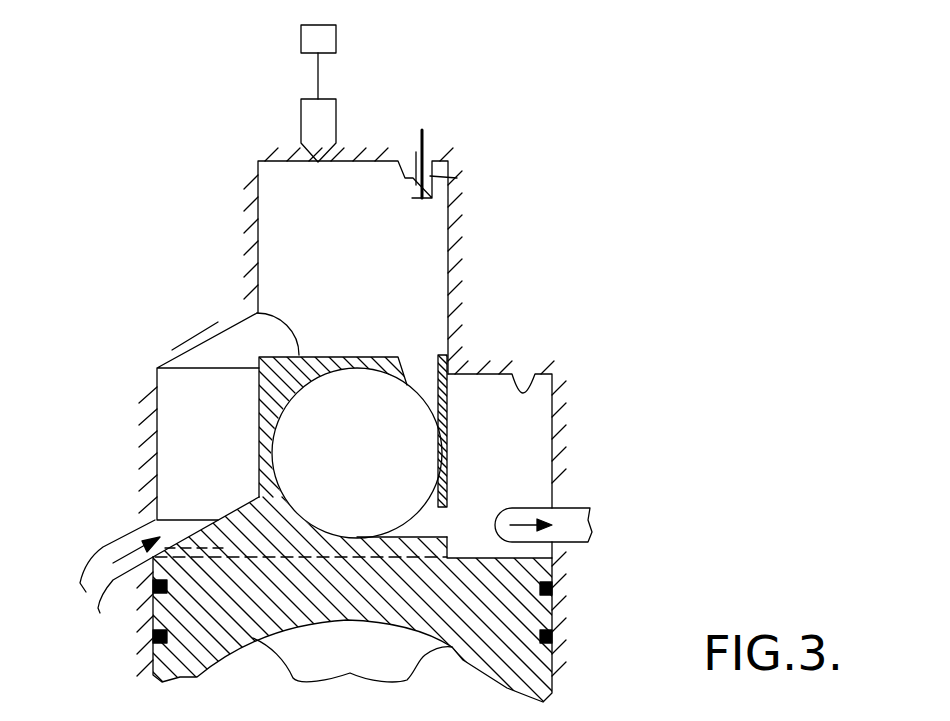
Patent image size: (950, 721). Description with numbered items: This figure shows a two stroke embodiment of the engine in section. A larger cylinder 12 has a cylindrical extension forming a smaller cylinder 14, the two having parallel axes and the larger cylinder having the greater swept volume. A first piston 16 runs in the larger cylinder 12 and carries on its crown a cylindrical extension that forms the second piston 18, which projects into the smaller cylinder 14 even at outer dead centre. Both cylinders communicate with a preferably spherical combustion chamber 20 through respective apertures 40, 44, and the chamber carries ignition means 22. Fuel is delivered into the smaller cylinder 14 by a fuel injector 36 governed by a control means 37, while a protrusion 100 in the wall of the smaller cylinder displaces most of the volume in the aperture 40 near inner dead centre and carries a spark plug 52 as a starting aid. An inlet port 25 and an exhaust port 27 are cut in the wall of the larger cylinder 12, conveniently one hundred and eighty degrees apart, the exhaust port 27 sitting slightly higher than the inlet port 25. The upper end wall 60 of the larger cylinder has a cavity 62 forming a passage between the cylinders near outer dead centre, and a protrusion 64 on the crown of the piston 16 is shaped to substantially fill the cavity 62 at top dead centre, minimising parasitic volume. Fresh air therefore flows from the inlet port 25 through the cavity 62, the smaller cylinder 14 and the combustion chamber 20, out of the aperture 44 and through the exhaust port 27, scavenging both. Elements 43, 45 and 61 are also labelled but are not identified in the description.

The larger cylinder 12 is at (533, 413).
The smaller cylinder 14 is at (290, 183).
The first piston 16 is at (523, 603).
The second piston 18 is at (273, 393).
The combustion chamber 20 is at (365, 440).
The ignition means 22 is at (275, 420).
The inlet port 25 is at (138, 535).
The exhaust port 27 is at (567, 522).
The fuel injector 36 is at (310, 127).
The control means 37 is at (313, 38).
The aperture 40 is at (425, 370).
The chamber wall liner 43 is at (463, 362).
The aperture 44 is at (428, 528).
The curved surface 45 is at (268, 360).
The spark plug 52 is at (424, 138).
The upper end wall 60 is at (533, 365).
The inclined surface 61 is at (212, 340).
The cavity 62 is at (242, 347).
The protrusion 64 is at (237, 508).
The protrusion 100 is at (457, 178).